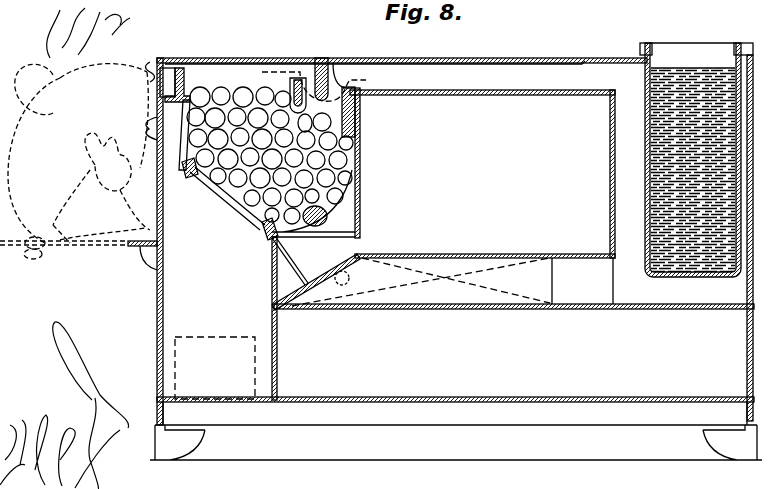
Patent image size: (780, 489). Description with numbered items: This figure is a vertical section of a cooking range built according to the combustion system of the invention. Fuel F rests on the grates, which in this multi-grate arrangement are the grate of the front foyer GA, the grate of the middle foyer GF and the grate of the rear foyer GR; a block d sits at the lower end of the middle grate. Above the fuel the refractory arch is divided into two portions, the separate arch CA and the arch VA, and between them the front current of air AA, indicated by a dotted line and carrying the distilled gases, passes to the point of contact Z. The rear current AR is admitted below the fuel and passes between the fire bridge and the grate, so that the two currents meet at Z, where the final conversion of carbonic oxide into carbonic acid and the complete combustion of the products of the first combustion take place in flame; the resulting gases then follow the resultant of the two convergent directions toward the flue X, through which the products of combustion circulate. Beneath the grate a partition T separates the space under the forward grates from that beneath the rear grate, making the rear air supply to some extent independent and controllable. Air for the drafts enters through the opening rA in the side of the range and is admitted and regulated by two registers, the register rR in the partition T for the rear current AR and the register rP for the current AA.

The register rP is at (173, 70).
The arch VA is at (334, 55).
The draft of air (front current) AA is at (266, 76).
The point of contact Z is at (357, 86).
The flue X is at (482, 163).
The separate arch CA is at (306, 108).
The rear current of air AR is at (355, 120).
The grate of the front foyer GA is at (182, 146).
The fuel F is at (270, 155).
The grate of the middle foyer GF is at (223, 195).
The pivot block d is at (262, 228).
The grate of the rear foyer GR is at (327, 208).
The partition T is at (316, 273).
The register rR is at (336, 279).
The opening rA is at (215, 368).